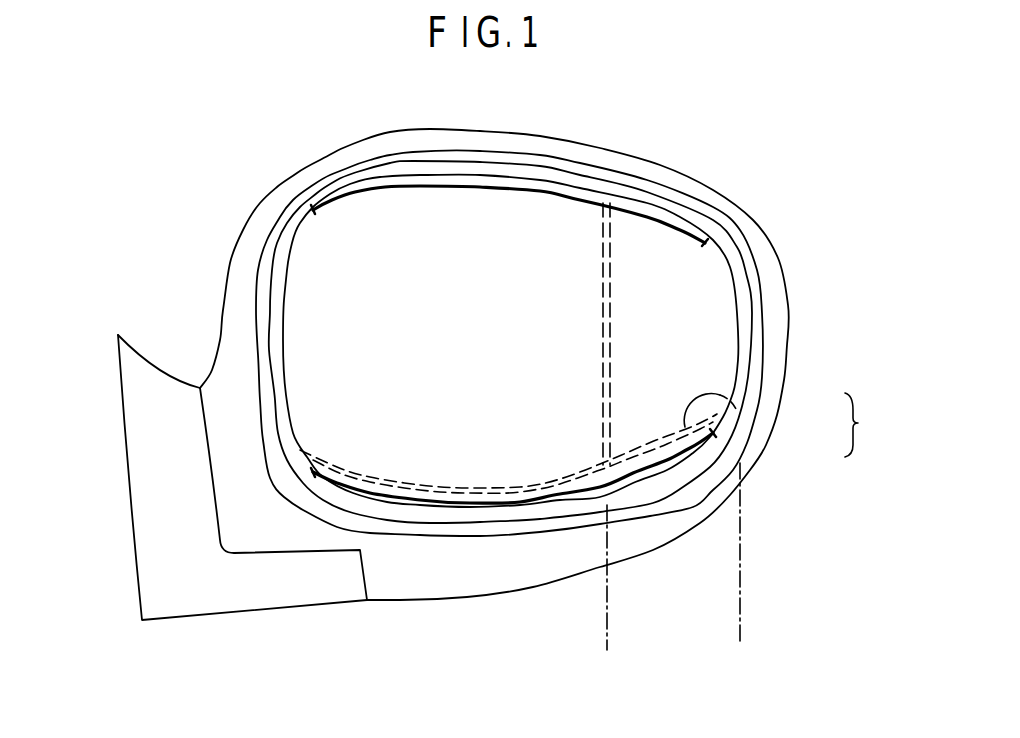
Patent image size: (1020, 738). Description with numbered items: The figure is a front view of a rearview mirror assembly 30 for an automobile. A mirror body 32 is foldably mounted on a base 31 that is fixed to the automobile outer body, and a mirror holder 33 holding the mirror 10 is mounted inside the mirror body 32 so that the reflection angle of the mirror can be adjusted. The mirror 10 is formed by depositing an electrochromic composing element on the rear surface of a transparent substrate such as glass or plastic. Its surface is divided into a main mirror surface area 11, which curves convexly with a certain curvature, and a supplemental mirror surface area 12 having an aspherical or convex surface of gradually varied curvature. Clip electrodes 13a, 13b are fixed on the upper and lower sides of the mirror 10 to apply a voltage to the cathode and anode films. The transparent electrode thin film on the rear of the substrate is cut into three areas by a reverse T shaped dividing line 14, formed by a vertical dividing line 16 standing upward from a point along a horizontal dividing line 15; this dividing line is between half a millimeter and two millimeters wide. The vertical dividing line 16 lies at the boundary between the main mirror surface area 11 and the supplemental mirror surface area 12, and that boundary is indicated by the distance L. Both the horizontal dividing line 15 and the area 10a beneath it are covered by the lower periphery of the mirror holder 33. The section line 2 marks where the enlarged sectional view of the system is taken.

The mirror 10 is at (320, 262).
The area under the horizontal dividing line 10a is at (415, 492).
The main mirror surface area 11 is at (606, 652).
The supplemental mirror surface area 12 is at (741, 652).
The clip electrode 13a is at (407, 176).
The clip electrode 13b is at (653, 465).
The reverse T shaped dividing line 14 is at (867, 425).
The horizontal dividing line 15 is at (737, 400).
The vertical dividing line 16 is at (610, 358).
The rearview mirror assembly 30 is at (752, 210).
The base 31 is at (160, 531).
The mirror body 32 is at (623, 163).
The mirror holder 33 is at (663, 207).
The section line 2- 2 is at (484, 133).
The dimension L is at (560, 333).